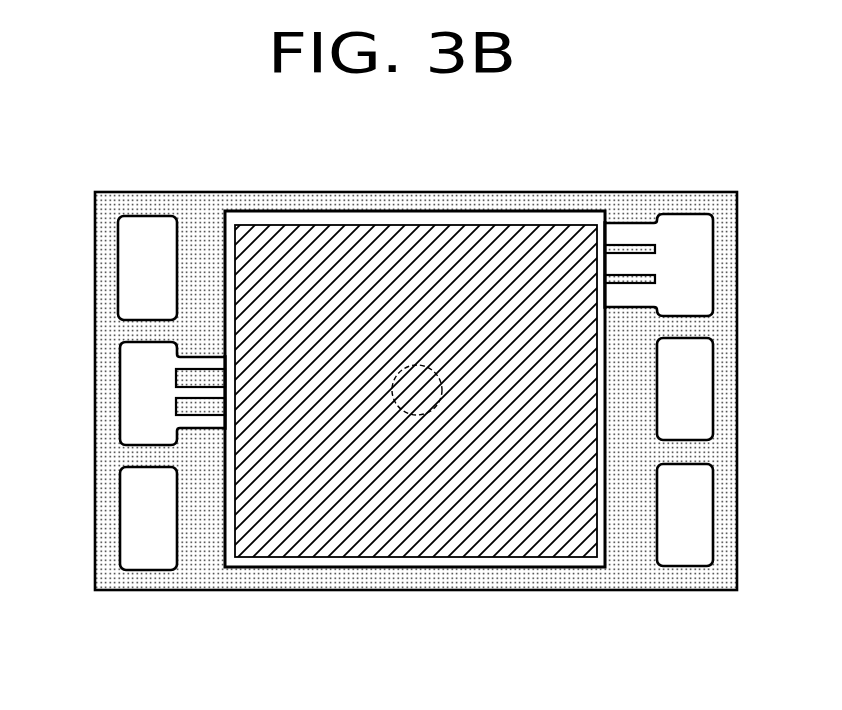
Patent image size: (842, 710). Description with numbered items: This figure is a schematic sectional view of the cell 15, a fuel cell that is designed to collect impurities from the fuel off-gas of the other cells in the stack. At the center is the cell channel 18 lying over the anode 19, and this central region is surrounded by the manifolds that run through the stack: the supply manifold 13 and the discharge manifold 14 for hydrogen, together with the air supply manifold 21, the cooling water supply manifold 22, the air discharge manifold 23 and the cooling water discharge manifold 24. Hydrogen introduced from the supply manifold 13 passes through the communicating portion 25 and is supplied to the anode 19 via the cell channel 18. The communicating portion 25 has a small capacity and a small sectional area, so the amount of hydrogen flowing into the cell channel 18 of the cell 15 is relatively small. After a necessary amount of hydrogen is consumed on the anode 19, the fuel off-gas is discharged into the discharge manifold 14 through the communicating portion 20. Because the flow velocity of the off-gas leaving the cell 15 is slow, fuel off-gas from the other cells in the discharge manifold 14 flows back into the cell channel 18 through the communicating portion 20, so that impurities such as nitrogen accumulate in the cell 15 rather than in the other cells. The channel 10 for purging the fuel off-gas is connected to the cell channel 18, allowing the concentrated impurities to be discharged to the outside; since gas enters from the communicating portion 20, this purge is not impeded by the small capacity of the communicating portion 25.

The channel 10 is at (410, 416).
The supply manifold 13 is at (127, 403).
The discharge manifold 14 is at (687, 263).
The cell 15 is at (403, 680).
The cell channel 18 is at (302, 222).
The anode 19 is at (462, 250).
The communicating portion 20 is at (628, 238).
The air supply manifold 21 is at (127, 283).
The cooling water supply manifold 22 is at (127, 529).
The air discharge manifold 23 is at (687, 517).
The cooling water discharge manifold 24 is at (687, 391).
The communicating portion 25 is at (208, 364).